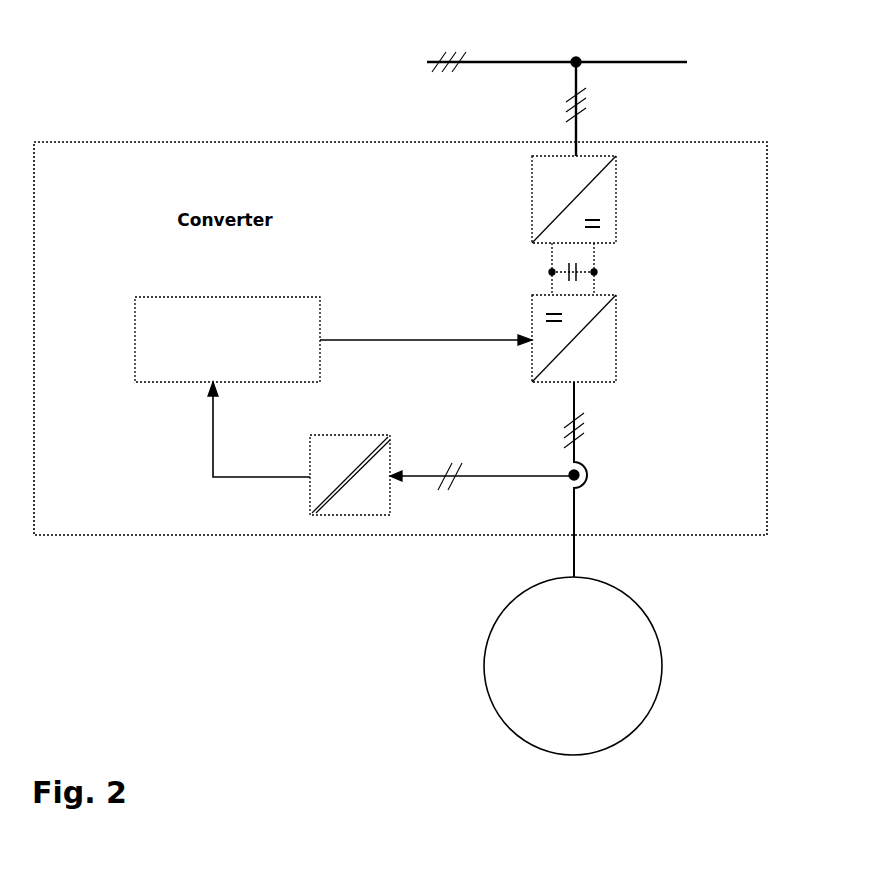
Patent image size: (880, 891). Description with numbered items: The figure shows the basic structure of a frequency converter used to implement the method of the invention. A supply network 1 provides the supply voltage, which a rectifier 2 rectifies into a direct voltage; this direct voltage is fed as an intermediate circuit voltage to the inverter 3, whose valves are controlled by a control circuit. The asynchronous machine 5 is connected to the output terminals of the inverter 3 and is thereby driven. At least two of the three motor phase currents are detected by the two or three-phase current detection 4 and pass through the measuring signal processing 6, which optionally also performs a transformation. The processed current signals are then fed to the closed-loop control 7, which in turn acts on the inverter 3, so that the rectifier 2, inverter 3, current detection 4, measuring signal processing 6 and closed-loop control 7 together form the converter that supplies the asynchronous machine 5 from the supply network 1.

The supply network 1 is at (557, 78).
The rectifier 2 is at (606, 199).
The inverter 3 is at (608, 338).
The current detection 4 is at (605, 479).
The asynchronous machine 5 is at (594, 666).
The measuring signal processing 6 is at (391, 448).
The closed-loop control 7 is at (333, 315).